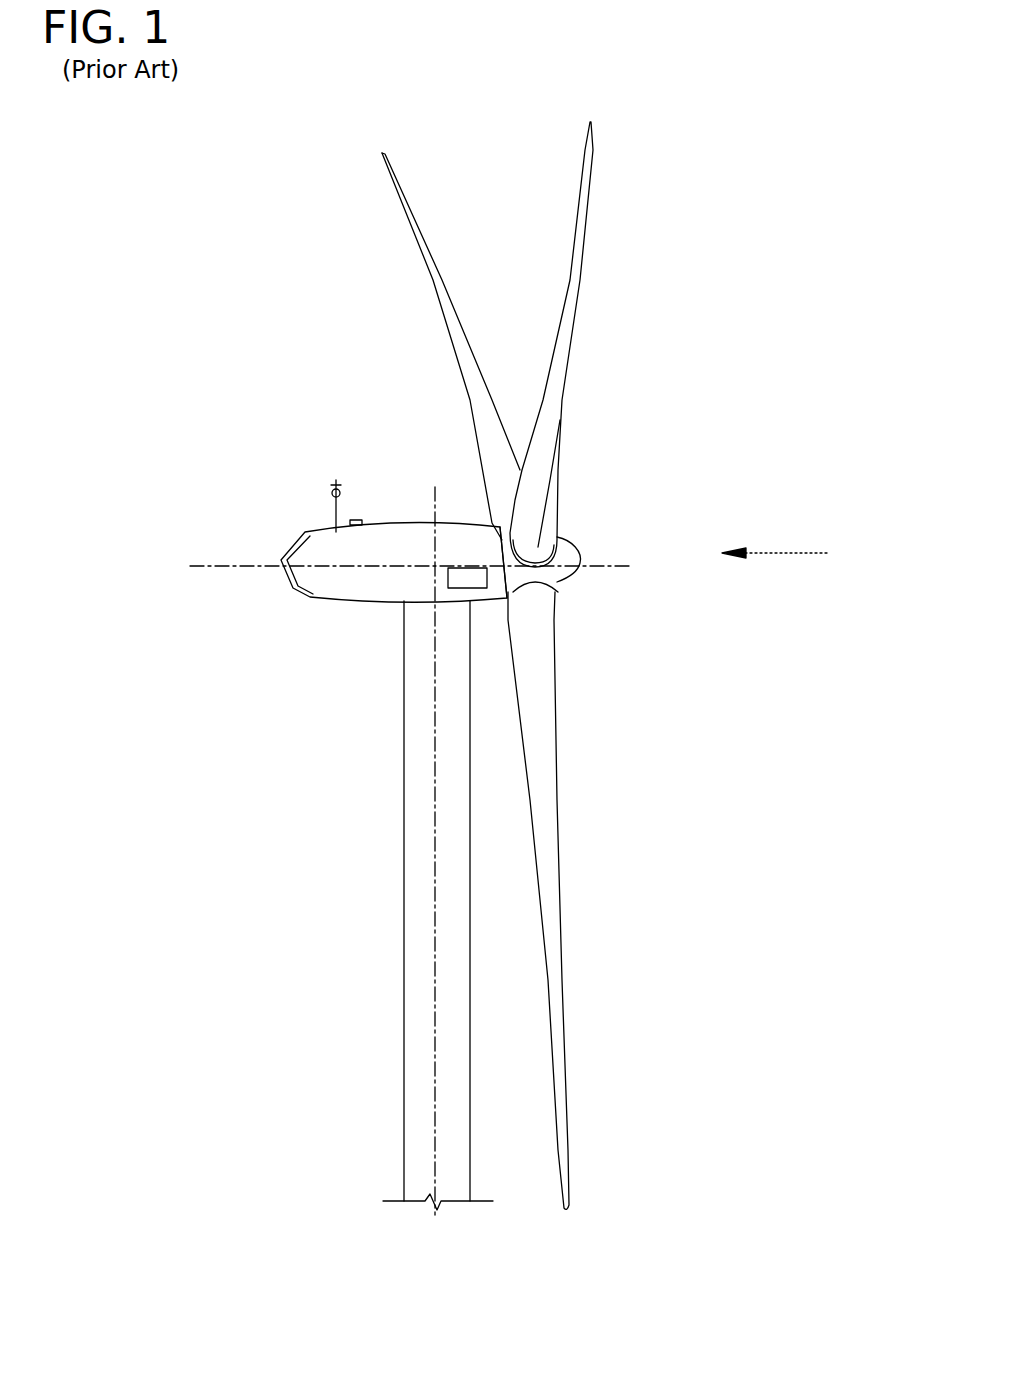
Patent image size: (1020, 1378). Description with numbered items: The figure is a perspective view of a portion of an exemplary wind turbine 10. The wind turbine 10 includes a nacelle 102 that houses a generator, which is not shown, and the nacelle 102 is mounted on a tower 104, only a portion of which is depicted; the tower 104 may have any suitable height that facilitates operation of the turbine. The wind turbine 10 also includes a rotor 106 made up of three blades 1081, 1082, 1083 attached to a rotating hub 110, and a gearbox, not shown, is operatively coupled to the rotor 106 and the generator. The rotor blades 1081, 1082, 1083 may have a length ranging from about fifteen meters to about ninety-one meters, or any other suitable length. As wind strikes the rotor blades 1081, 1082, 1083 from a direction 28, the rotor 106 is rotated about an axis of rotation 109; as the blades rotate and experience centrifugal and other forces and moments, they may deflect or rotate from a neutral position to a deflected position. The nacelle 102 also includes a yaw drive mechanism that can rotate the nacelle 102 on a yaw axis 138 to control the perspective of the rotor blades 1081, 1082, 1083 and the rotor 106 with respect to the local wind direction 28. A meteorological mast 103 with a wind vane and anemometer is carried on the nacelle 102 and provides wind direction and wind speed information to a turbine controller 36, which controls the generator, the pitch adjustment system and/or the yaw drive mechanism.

The wind turbine 10 is at (272, 200).
The nacelle 102 is at (333, 603).
The wind sensor / meteorological mast 103 is at (315, 480).
The tower 104 is at (405, 857).
The rotor 106 is at (632, 320).
The rotor blade 1081 is at (590, 197).
The rotor blade 1082 is at (422, 233).
The rotor blade 1083 is at (563, 963).
The axis of rotation 109 is at (602, 560).
The rotating hub 110 is at (580, 567).
The wind direction 28 is at (797, 550).
The turbine controller 36 is at (470, 580).
The yaw axis 138 is at (435, 765).